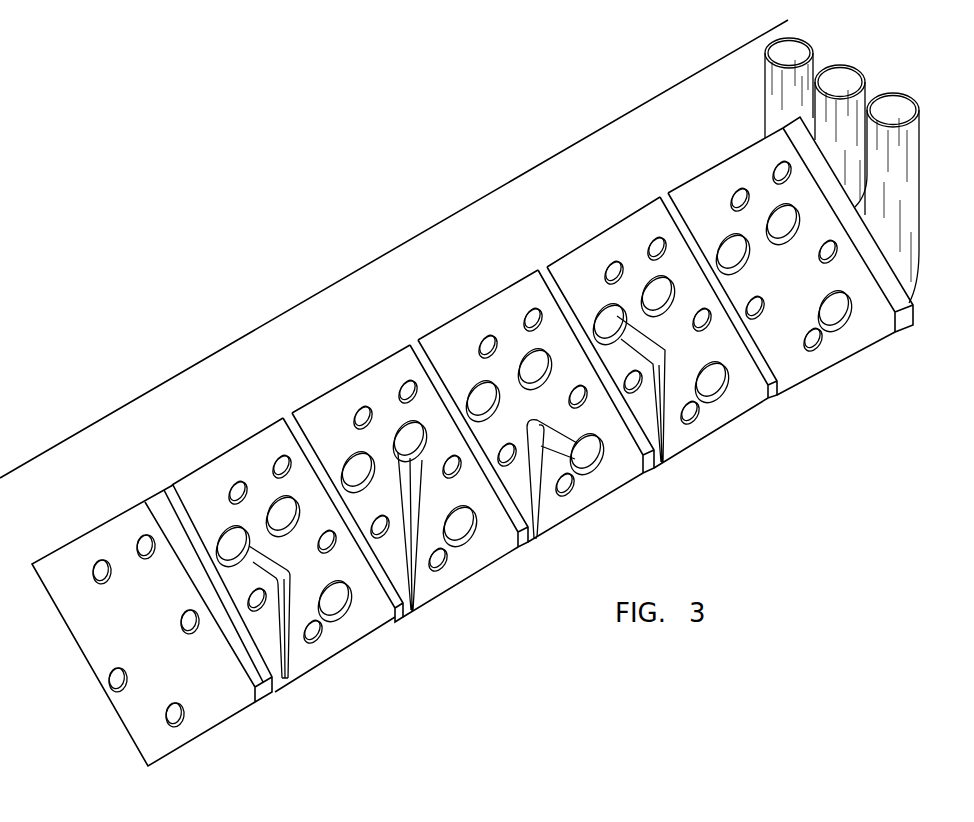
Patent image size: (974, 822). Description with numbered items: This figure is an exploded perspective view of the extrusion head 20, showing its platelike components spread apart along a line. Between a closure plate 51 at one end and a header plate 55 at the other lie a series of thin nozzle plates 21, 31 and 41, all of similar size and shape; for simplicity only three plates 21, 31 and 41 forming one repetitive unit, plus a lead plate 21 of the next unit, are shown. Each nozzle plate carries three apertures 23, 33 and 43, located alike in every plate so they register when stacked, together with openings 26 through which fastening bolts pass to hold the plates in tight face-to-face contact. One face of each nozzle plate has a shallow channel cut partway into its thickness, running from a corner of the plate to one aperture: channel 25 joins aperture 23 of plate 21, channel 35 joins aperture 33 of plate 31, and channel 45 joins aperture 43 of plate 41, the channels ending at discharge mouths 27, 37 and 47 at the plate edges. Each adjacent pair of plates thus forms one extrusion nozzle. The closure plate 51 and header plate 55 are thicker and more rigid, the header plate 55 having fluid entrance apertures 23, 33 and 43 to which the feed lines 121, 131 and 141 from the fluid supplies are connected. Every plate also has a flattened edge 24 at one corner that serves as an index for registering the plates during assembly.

The extrusion head 20 is at (395, 248).
The nozzle plate 21 is at (212, 470).
The aperture 23 is at (232, 530).
The flattened edge 24 is at (262, 701).
The channel 25 is at (288, 586).
The openings 26 is at (100, 582).
The discharge mouth 27 is at (286, 682).
The nozzle plate 31 is at (350, 388).
The aperture 33 is at (280, 517).
The channel 35 is at (411, 496).
The discharge mouth 37 is at (412, 612).
The nozzle plate 41 is at (450, 331).
The aperture 43 is at (334, 597).
The channel 45 is at (543, 432).
The discharge mouth 47 is at (536, 540).
The closure plate 51 is at (116, 528).
The header plate 55 is at (705, 178).
The feed line 121 is at (771, 83).
The feed line 131 is at (857, 69).
The feed line 141 is at (909, 133).